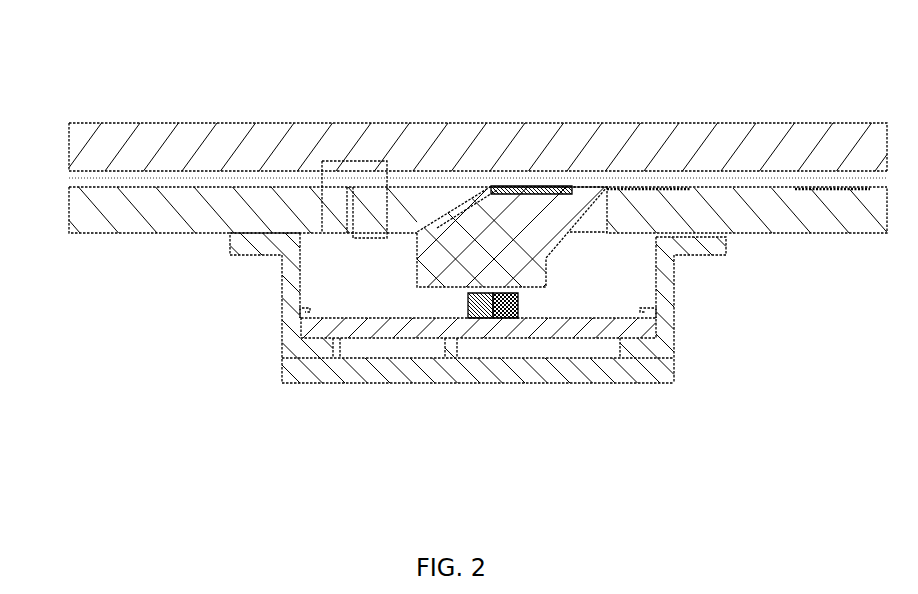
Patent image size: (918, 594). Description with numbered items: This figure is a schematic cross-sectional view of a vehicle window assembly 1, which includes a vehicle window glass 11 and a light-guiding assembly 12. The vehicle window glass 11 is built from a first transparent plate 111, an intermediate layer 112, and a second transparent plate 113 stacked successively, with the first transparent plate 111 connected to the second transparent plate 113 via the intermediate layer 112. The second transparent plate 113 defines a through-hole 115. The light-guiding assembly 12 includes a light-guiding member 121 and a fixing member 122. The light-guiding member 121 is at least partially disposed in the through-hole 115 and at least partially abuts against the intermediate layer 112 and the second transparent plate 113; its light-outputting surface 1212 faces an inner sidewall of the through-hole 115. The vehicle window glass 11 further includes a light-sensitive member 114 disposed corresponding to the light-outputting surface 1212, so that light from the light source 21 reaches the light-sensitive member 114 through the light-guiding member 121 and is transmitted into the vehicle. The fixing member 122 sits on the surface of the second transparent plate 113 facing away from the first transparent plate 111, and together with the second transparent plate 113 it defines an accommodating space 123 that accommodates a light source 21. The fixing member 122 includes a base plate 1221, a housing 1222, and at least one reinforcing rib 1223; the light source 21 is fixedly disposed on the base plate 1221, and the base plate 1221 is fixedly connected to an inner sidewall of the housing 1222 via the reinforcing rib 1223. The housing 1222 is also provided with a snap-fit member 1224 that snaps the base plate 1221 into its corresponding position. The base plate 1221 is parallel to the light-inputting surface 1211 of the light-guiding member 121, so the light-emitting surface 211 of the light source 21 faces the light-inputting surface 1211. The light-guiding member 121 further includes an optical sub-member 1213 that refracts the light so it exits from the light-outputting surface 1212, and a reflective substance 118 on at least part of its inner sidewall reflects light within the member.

The vehicle window assembly 1 is at (497, 46).
The vehicle window glass 11 is at (47, 30).
The first transparent plate 111 is at (132, 147).
The intermediate layer 112 is at (102, 180).
The second transparent plate 113 is at (135, 197).
The light-sensitive member 114 is at (743, 192).
The through-hole 115 is at (350, 195).
The reflective substance 118 is at (547, 190).
The light-outputting surface 1212 is at (602, 217).
The optical sub-member 1213 is at (436, 224).
The light-guiding assembly 12 is at (290, 499).
The light-guiding member 121 is at (428, 320).
The fixing member 122 is at (245, 466).
The base plate 1221 is at (375, 327).
The housing 1222 is at (288, 300).
The reinforcing rib 1223 is at (333, 348).
The snap-fit member 1224 is at (306, 311).
The accommodating space 123 is at (587, 293).
The light source 21 is at (503, 318).
The light-emitting surface 211 is at (490, 320).
The light-inputting surface 1211 is at (537, 288).